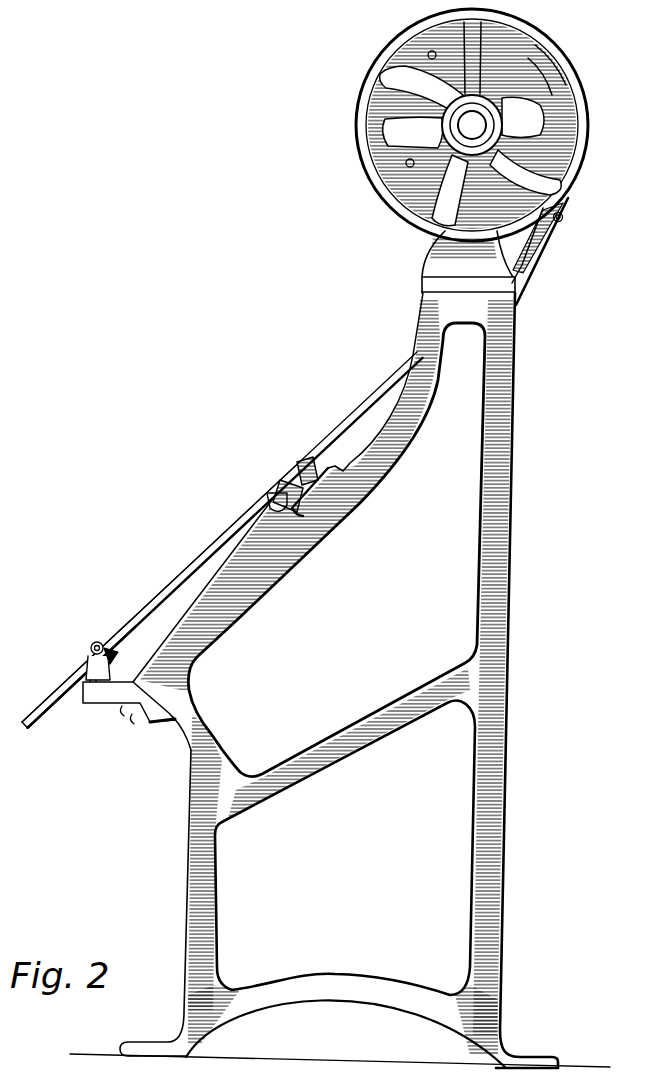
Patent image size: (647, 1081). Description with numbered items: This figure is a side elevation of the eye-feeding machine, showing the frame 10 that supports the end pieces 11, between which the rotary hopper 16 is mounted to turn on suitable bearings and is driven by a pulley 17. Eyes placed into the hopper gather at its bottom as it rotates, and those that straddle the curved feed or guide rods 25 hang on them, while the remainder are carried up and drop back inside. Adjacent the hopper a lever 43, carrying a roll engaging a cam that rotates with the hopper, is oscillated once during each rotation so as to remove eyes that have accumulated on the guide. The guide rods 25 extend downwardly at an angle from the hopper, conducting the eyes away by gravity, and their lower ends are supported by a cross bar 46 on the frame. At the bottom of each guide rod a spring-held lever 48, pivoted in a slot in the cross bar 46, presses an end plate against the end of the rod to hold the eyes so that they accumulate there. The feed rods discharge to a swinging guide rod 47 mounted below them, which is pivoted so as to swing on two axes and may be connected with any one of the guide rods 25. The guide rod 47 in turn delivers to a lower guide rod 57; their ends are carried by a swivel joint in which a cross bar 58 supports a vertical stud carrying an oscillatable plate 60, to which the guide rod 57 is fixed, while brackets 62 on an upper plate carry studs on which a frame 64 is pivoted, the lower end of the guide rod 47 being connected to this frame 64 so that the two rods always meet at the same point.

The frame 10 is at (340, 649).
The end pieces 11 is at (440, 258).
The rotary hopper 16 is at (406, 36).
The pulley 17 is at (378, 74).
The curved feed or guide rods 25 is at (328, 433).
The lever 43 is at (531, 277).
The cross bar 46 is at (300, 463).
The swinging guide rods 47 is at (194, 559).
The lever 48 is at (278, 494).
The lower guide rods 57 is at (38, 709).
The cross bar 58 is at (120, 703).
The oscillatable plate 60 is at (92, 700).
The brackets 62 is at (91, 656).
The frame 64 is at (118, 658).